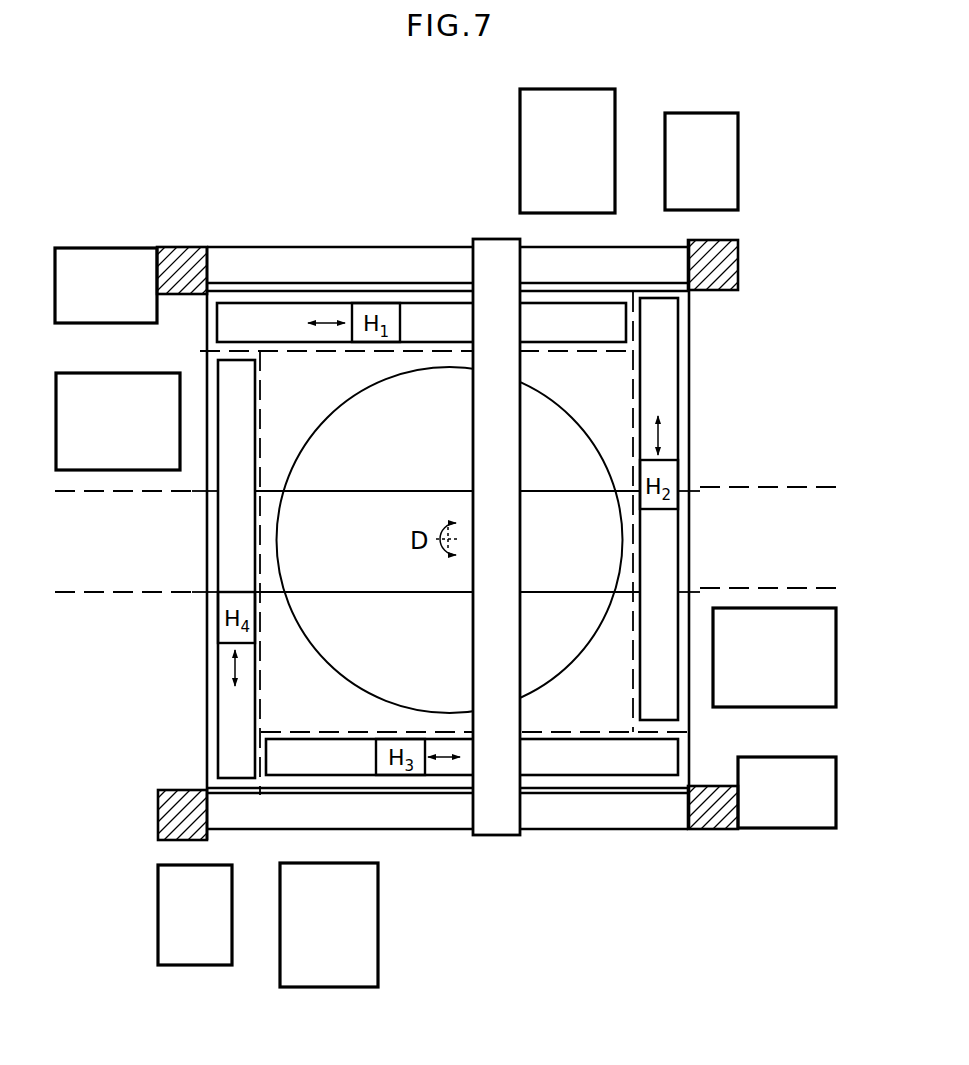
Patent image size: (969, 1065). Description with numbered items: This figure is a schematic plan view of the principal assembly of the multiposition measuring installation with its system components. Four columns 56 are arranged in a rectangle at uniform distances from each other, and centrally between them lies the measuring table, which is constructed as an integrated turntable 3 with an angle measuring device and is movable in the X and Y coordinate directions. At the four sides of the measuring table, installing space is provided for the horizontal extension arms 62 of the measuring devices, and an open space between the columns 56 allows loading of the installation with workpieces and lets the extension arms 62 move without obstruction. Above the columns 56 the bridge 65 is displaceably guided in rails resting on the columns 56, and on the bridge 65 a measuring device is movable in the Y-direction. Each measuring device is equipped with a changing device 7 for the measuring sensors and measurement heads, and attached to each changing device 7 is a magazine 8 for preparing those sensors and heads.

The turntable 3 is at (566, 438).
The changing device 7 is at (100, 255).
The magazine 8 is at (86, 457).
The column 56 is at (188, 262).
The horizontal extension arm 62 is at (357, 305).
The bridge 65 is at (500, 717).